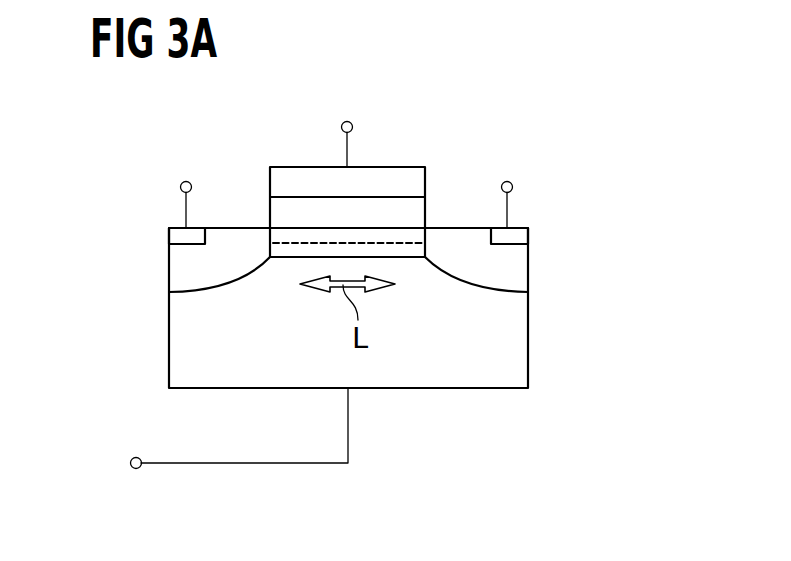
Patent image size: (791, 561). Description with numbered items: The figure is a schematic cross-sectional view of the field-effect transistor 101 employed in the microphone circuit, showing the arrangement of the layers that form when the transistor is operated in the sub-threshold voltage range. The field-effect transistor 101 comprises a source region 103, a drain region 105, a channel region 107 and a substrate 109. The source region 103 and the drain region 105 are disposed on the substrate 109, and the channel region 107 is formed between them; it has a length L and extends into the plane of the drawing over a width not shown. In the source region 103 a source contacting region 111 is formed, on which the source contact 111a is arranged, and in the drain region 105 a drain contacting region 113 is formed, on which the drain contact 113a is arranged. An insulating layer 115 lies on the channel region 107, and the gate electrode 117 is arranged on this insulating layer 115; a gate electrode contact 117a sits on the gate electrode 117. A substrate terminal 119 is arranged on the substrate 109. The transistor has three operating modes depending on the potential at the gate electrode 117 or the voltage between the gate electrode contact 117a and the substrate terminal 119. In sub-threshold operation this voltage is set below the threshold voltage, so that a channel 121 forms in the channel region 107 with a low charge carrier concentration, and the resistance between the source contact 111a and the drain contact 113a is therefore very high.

The field-effect transistor 101 is at (497, 121).
The source region 103 is at (185, 268).
The drain region 105 is at (508, 277).
The channel region 107 is at (293, 250).
The substrate 109 is at (487, 372).
The source contacting region 111 is at (178, 237).
The source contact 111a is at (184, 200).
The drain contacting region 113 is at (518, 235).
The drain contact 113a is at (510, 212).
The insulating layer 115 is at (283, 208).
The gate electrode 117 is at (310, 180).
The gate electrode contact 117a is at (353, 143).
The substrate terminal 119 is at (210, 463).
The channel 121 is at (410, 249).